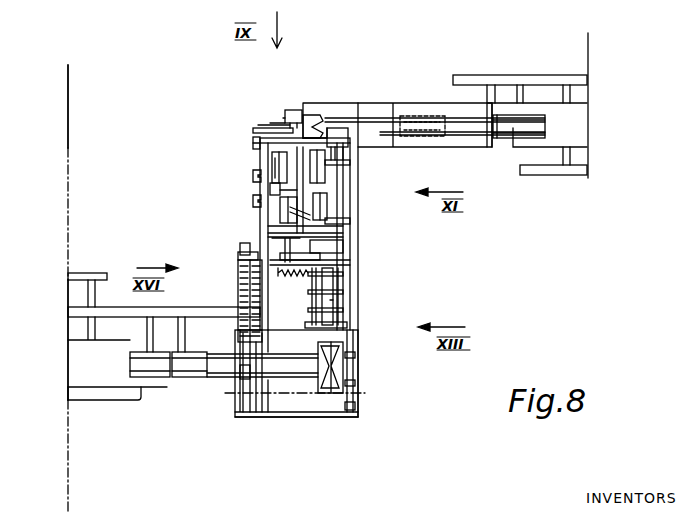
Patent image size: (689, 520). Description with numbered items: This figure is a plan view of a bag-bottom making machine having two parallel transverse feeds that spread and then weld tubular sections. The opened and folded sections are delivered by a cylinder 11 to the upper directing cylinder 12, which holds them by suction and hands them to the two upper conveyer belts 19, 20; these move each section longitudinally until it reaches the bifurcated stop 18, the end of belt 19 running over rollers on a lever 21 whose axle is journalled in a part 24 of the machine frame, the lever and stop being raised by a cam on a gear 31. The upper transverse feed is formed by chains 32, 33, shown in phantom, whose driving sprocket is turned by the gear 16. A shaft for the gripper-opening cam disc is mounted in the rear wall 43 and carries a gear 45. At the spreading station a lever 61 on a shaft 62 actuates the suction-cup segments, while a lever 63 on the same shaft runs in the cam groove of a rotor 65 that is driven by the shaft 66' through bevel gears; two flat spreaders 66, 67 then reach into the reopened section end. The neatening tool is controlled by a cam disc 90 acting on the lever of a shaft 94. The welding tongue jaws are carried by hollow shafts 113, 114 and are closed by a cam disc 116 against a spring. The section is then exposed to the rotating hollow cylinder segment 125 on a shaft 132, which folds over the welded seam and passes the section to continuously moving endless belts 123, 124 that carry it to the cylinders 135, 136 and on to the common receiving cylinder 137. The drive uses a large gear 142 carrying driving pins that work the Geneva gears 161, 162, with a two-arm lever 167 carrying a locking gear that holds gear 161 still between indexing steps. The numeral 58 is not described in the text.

The cylinder 11 is at (578, 124).
The directing cylinder 12 is at (530, 115).
The gear 16 is at (240, 414).
The stop 18 is at (321, 104).
The conveyer belt 19 is at (378, 120).
The conveyer belt 20 is at (462, 137).
The lever 21 is at (297, 110).
The part of the machine frame 24 is at (340, 140).
The gear 31 is at (253, 130).
The chain 32 is at (360, 404).
The chain 33 is at (336, 393).
The rear wall 43 is at (265, 227).
The gear 45 is at (252, 150).
The knurled knob 58 is at (253, 203).
The lever 61 is at (278, 208).
The shaft 62 is at (275, 189).
The lever 63 is at (342, 207).
The rotor 65 is at (305, 217).
The spreader 66 is at (356, 171).
The shaft 66' is at (242, 167).
The spreader 67 is at (332, 198).
The cam disc 90 is at (343, 247).
The shaft 94 is at (348, 163).
The hollow shaft 113 is at (312, 298).
The hollow shaft 114 is at (347, 283).
The cam disc 116 is at (347, 257).
The endless belt 123 is at (257, 357).
The endless belt 124 is at (257, 400).
The hollow cylinder segment 125 is at (328, 394).
The shaft 132 is at (330, 302).
The cylinder 135 is at (155, 366).
The cylinder 136 is at (198, 366).
The receiving cylinder 137 is at (115, 375).
The gear 142 is at (240, 296).
The gear 161 is at (238, 330).
The gear 162 is at (258, 322).
The two-arm lever 167 is at (243, 247).